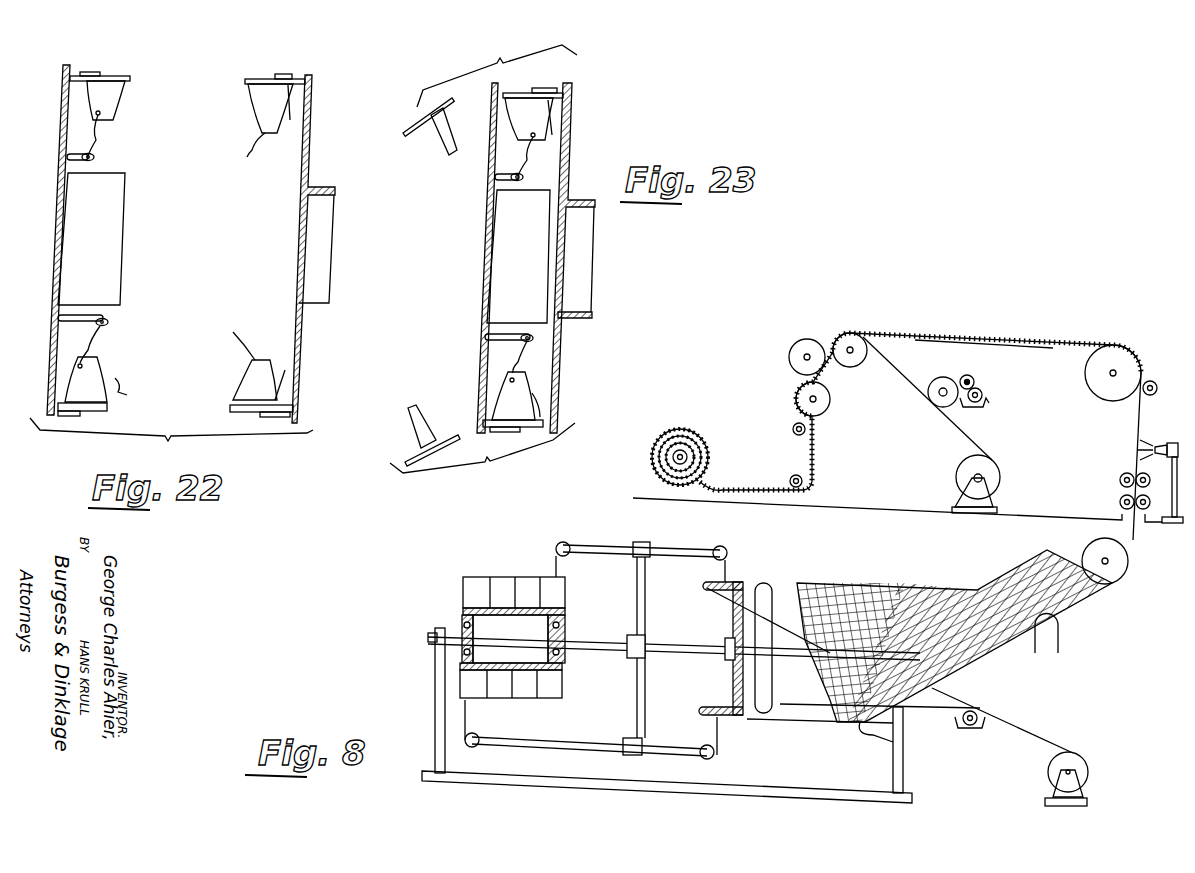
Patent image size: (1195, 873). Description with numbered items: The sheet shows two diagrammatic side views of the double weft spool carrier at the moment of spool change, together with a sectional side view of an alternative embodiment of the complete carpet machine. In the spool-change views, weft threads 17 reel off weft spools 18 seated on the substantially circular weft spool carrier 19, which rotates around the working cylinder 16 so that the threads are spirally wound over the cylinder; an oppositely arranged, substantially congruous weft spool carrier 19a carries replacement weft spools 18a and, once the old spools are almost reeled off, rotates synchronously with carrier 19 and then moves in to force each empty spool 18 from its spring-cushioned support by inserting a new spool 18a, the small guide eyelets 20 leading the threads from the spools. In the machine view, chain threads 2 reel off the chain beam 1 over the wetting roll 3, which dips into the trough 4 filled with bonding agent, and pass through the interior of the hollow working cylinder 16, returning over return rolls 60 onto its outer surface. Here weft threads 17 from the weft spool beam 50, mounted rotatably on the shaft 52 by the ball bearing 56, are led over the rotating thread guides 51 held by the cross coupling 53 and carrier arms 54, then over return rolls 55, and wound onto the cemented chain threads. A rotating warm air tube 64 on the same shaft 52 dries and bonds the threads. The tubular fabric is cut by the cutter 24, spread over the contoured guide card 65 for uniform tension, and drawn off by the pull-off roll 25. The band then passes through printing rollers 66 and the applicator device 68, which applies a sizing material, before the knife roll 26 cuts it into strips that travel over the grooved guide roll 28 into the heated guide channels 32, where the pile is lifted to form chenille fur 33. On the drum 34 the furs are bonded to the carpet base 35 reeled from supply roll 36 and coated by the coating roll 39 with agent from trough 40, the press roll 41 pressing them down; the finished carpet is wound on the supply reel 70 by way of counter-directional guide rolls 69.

In FIG. 8, the chain beam 1 is at (1087, 756).
In FIG. 8, the chain threads 2 is at (923, 706).
In FIG. 8, the wetting roll 3 is at (978, 712).
In FIG. 8, the trough 4 is at (975, 729).
In FIG. 22, the working cylinder 16 is at (118, 210).
In FIG. 23, the working cylinder 16 is at (522, 255).
In FIG. 8, the working cylinder 16 is at (764, 648).
In FIG. 22, the weft threads 17 is at (94, 133).
In FIG. 23, the weft threads 17 is at (526, 155).
In FIG. 8, the weft threads 17 is at (560, 578).
In FIG. 22, the weft spool 18 is at (125, 87).
In FIG. 23, the weft spool 18 is at (437, 142).
In FIG. 22, the replacement weft spool 18a is at (255, 118).
In FIG. 23, the replacement weft spool 18a is at (527, 105).
In FIG. 22, the weft spool carrier 19 is at (48, 355).
In FIG. 23, the weft spool carrier 19 is at (483, 312).
In FIG. 22, the second weft spool carrier 19a is at (300, 342).
In FIG. 23, the second weft spool carrier 19a is at (558, 340).
In FIG. 22, the eyelet 20 is at (110, 320).
In FIG. 23, the eyelet 20 is at (524, 178).
In FIG. 8, the cutter 24 is at (868, 729).
In FIG. 8, the pull-off roll 25 is at (1096, 545).
In FIG. 8, the knife roll 26 is at (1157, 385).
In FIG. 8, the guide roll 28 is at (1105, 393).
In FIG. 8, the guide channels 32 is at (1012, 344).
In FIG. 8, the chenille fur 33 is at (905, 332).
In FIG. 8, the drum 34 is at (868, 357).
In FIG. 8, the carpet base 35 is at (910, 388).
In FIG. 8, the supply roll 36 is at (996, 474).
In FIG. 8, the coating roll 39 is at (943, 378).
In FIG. 8, the trough 40 is at (985, 405).
In FIG. 8, the press roll 41 is at (788, 362).
In FIG. 8, the weft spool beam 50 is at (556, 605).
In FIG. 8, the rotating thread guide 51 is at (660, 537).
In FIG. 8, the shaft 52 is at (605, 645).
In FIG. 8, the cross coupling 53 is at (648, 642).
In FIG. 8, the carrier arms 54 is at (647, 612).
In FIG. 8, the return rolls 55 is at (560, 543).
In FIG. 8, the ball bearing 56 is at (460, 628).
In FIG. 8, the return rolls 60 is at (712, 585).
In FIG. 8, the warm air tube 64 is at (765, 585).
In FIG. 8, the guide card 65 is at (1045, 552).
In FIG. 8, the printing rollers 66 is at (1119, 479).
In FIG. 8, the applicator device 68 is at (1175, 443).
In FIG. 8, the counter-directional guide rolls 69 is at (790, 479).
In FIG. 8, the supply reel 70 is at (697, 432).